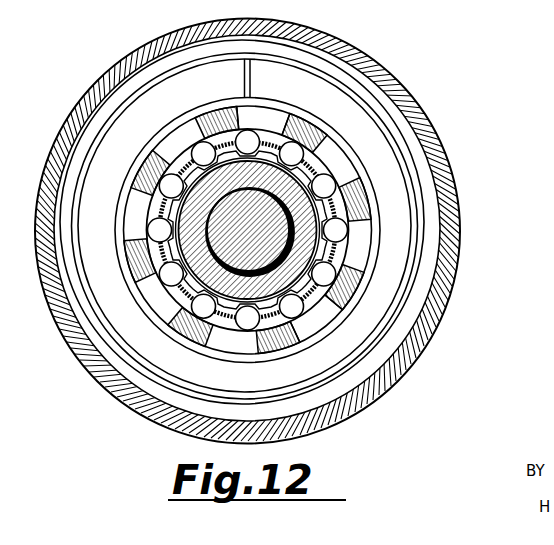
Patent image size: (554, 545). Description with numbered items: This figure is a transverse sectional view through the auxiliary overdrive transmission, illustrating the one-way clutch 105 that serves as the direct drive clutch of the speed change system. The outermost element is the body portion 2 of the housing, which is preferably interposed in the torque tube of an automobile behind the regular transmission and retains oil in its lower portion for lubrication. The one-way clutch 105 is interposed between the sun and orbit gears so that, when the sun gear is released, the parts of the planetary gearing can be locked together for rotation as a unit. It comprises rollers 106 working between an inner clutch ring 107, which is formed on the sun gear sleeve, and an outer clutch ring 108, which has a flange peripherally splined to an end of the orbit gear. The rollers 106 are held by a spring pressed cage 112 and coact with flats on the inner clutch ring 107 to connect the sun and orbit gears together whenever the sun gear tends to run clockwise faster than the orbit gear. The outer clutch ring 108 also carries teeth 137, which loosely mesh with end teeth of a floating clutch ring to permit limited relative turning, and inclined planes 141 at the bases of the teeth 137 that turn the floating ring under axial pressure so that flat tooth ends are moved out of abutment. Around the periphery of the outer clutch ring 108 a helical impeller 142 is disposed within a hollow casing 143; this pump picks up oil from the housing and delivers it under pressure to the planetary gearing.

The body portion 2 is at (352, 52).
The one-way clutch 105 is at (237, 246).
The rollers 106 is at (243, 323).
The inner clutch ring 107 is at (190, 208).
The outer clutch ring 108 is at (268, 113).
The spring pressed cage 112 is at (180, 298).
The teeth 137 is at (352, 283).
The inclined planes 141 is at (334, 308).
The helical impeller 142 is at (398, 174).
The hollow casing 143 is at (420, 210).